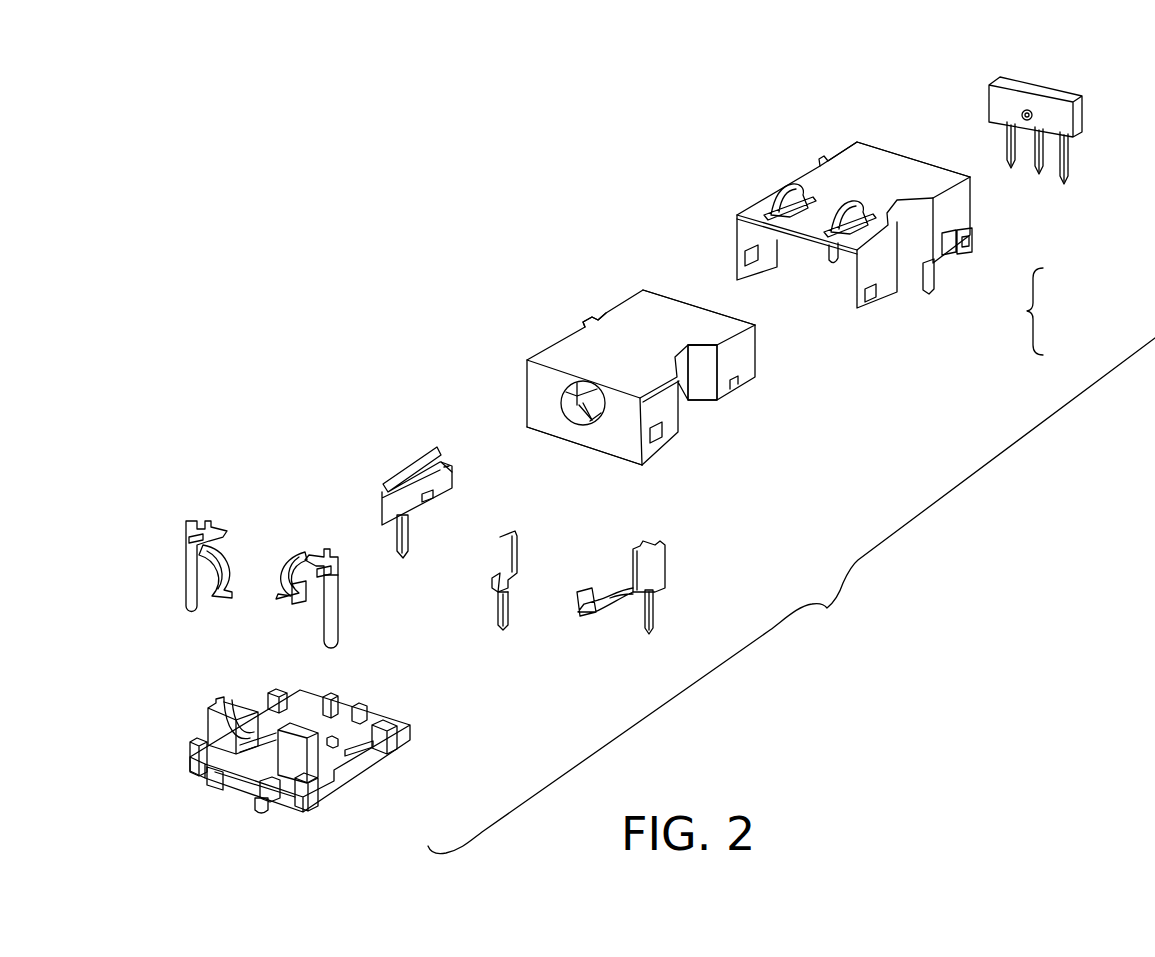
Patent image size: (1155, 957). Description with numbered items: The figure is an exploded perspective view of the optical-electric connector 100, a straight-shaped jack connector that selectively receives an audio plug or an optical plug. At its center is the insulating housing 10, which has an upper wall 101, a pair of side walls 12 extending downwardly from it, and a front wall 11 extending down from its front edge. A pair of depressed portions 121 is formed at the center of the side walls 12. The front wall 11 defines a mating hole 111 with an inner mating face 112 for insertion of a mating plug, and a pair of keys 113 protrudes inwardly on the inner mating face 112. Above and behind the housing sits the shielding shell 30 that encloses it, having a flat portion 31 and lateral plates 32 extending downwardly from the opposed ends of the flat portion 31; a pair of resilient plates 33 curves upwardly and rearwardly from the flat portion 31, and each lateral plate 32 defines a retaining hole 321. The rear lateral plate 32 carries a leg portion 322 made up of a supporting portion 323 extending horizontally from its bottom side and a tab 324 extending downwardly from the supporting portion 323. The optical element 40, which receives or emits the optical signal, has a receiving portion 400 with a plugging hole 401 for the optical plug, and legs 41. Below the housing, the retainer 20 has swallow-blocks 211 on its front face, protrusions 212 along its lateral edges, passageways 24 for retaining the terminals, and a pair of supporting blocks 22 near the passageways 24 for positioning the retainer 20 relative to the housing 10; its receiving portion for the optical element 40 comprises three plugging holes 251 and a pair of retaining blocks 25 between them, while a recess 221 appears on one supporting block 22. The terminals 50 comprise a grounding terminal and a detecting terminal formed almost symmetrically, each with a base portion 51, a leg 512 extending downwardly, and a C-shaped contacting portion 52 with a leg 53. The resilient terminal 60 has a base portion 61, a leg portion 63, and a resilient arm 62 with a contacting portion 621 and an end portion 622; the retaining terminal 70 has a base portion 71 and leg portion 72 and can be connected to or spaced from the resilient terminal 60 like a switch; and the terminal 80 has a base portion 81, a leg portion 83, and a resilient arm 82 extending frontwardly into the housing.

The optical-electric connector 100 is at (791, 596).
The insulating housing 10 is at (575, 294).
The upper wall 101 is at (712, 328).
The front wall 11 is at (626, 440).
The mating hole 111 is at (568, 393).
The inner mating face 112 is at (573, 412).
The keys 113 is at (588, 410).
The side walls 12 is at (676, 420).
The depressed portions 121 is at (592, 322).
The retainer 20 is at (304, 740).
The swallow-blocks 211 is at (218, 781).
The protrusions 212 is at (310, 786).
The supporting blocks 22 is at (215, 730).
The arc recess 221 is at (248, 725).
The passageways 24 is at (334, 742).
The retaining blocks 25 is at (370, 713).
The plugging holes 251 is at (376, 720).
The shielding shell 30 is at (790, 165).
The flat portion 31 is at (846, 165).
The lateral plates 32 is at (968, 200).
The retaining hole 321 is at (872, 300).
The leg portion 322 is at (1060, 311).
The supporting portion 323 is at (940, 255).
The tab 324 is at (930, 292).
The resilient plates 33 is at (790, 190).
The optical element 40 is at (1014, 114).
The receiving portion 400 is at (1000, 95).
The plugging hole 401 is at (1030, 110).
The legs 41 is at (1068, 172).
The terminals 50 is at (180, 520).
The base portion 51 is at (328, 578).
The leg 512 is at (332, 612).
The C-shaped contacting portion 52 is at (284, 548).
The leg 53 is at (297, 601).
The resilient terminal 60 is at (415, 513).
The base portion 61 is at (420, 465).
The resilient arm 62 is at (386, 500).
The contacting portion 621 is at (430, 499).
The end portion 622 is at (452, 465).
The leg portion 63 is at (403, 548).
The retaining terminal 70 is at (546, 567).
The base portion 71 is at (514, 558).
The leg portion 72 is at (506, 608).
The terminal 80 is at (653, 615).
The base portion 81 is at (652, 565).
The resilient arm 82 is at (580, 612).
The leg portion 83 is at (651, 612).